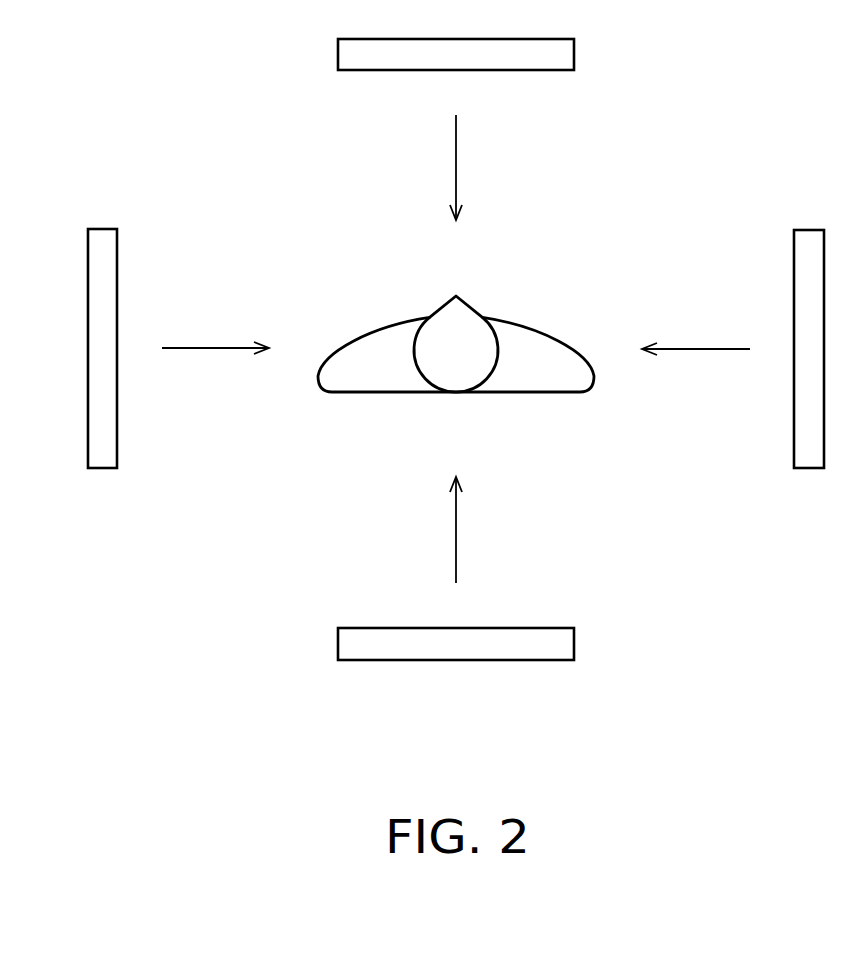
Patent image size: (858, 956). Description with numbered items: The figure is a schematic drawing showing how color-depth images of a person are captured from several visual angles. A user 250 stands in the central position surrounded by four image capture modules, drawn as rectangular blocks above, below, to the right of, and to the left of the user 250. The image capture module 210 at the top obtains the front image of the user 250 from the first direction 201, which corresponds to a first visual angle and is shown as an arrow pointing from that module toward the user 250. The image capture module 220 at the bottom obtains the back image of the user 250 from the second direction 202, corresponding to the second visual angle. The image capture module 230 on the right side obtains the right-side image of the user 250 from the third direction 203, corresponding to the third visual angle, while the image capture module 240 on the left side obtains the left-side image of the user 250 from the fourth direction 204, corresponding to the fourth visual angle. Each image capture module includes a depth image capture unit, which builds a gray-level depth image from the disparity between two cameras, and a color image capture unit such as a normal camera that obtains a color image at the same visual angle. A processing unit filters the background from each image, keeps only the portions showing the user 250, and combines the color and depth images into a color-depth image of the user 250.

The first direction 201 is at (485, 167).
The second direction 202 is at (485, 530).
The third direction 203 is at (696, 331).
The fourth direction 204 is at (215, 330).
The image capture module 210 is at (576, 52).
The image capture module 220 is at (576, 642).
The image capture module 230 is at (812, 229).
The image capture module 240 is at (102, 229).
The user 250 is at (548, 332).